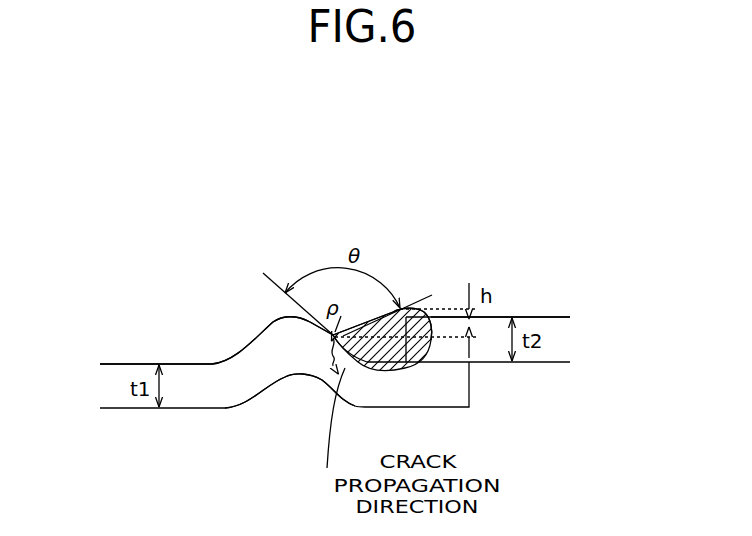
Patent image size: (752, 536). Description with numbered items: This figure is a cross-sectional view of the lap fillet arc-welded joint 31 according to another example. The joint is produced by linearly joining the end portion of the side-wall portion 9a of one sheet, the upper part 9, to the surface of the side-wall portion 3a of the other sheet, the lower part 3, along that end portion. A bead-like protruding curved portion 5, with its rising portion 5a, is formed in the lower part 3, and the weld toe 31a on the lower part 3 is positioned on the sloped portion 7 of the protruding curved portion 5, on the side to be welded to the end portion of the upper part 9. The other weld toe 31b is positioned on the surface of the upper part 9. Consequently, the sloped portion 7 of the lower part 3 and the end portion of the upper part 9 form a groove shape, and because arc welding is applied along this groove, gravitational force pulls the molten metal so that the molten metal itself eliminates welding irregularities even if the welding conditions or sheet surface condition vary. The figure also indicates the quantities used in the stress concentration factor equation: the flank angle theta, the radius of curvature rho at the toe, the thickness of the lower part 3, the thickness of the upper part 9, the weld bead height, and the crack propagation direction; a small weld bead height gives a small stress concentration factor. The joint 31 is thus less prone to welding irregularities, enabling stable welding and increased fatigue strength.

The lower part 3 is at (108, 388).
The side-wall portion 3a is at (110, 363).
The protruding curved portion 5 is at (273, 369).
The rising portion 5a is at (212, 363).
The sloped portion 7 is at (322, 322).
The upper part 9 is at (557, 340).
The side-wall portion 9a is at (533, 317).
The lap fillet arc-welded joint 31 is at (601, 137).
The weld toe 31a is at (350, 322).
The weld toe 31b is at (432, 320).